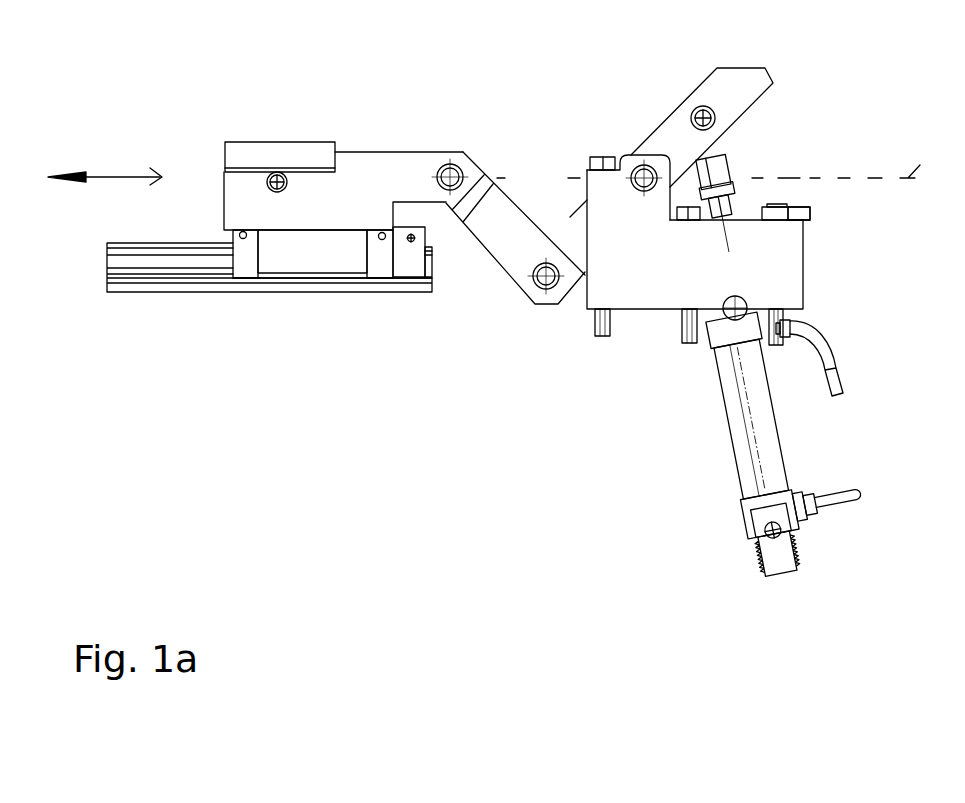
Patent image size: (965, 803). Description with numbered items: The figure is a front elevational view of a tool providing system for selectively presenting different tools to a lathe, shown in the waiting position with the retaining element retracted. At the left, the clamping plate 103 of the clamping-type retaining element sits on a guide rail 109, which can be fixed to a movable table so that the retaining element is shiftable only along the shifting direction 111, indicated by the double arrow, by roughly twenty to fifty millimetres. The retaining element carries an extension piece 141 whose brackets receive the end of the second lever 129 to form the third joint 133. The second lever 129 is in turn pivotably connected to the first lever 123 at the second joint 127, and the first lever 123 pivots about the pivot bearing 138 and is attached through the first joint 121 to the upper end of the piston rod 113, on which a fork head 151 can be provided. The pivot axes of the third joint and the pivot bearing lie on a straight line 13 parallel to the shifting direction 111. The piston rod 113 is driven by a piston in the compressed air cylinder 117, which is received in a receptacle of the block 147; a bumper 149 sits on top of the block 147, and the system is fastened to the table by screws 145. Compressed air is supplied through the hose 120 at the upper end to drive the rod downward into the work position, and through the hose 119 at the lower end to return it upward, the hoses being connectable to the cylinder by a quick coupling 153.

The axis / pivot line 13 is at (727, 164).
The clamping plate 103 is at (282, 147).
The guide rail 109 is at (168, 275).
The shifting direction 111 is at (117, 178).
The piston rod 113 is at (728, 210).
The compressed air cylinder 117 is at (782, 425).
The compressed air hose 119 is at (840, 500).
The compressed air hose 120 is at (837, 350).
The first joint 121 is at (705, 112).
The first lever 123 is at (750, 80).
The second joint 127 is at (535, 290).
The second lever 129 is at (505, 212).
The third joint 133 is at (457, 165).
The pivot bearing 138 is at (637, 193).
The extension piece 141 is at (367, 162).
The screws 145 is at (682, 343).
The block 147 is at (683, 282).
The bumper 149 is at (810, 212).
The fork head 151 is at (725, 173).
The quick coupling 153 is at (807, 493).